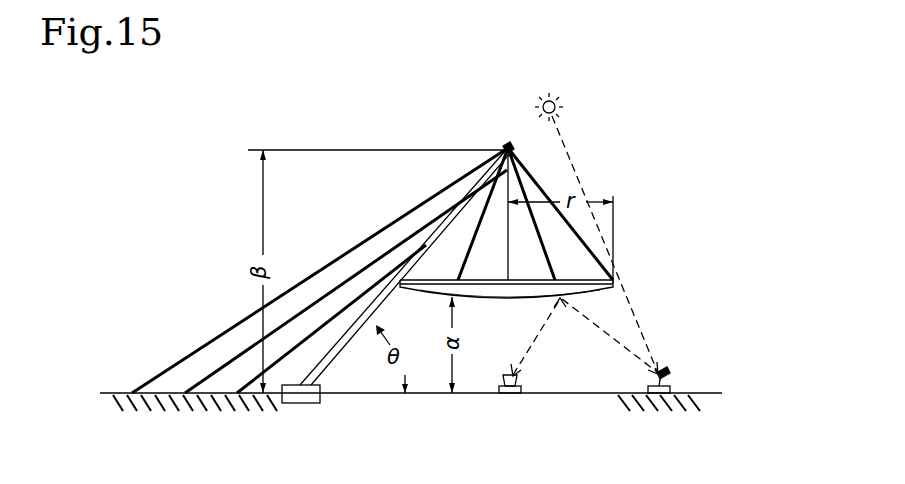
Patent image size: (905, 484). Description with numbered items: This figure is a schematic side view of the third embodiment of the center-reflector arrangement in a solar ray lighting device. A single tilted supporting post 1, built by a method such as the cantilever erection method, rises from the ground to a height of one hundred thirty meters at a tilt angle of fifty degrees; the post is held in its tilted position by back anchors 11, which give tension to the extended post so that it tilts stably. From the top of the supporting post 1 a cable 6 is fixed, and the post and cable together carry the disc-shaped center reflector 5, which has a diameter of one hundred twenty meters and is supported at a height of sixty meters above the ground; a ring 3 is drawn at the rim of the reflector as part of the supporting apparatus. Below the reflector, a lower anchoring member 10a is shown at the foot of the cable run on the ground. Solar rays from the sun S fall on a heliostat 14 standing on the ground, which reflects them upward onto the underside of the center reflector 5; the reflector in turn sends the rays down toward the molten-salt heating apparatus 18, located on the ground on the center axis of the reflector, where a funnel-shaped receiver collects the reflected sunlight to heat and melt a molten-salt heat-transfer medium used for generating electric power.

The supporting post 1 is at (372, 229).
The ring 3 is at (584, 281).
The center reflector 5 is at (496, 301).
The cable 6 is at (535, 176).
The back anchor 11 is at (243, 357).
The drive unit 10a is at (302, 403).
The heliostat 14 is at (677, 368).
The heating apparatus 18 is at (533, 377).
The sun S is at (566, 96).